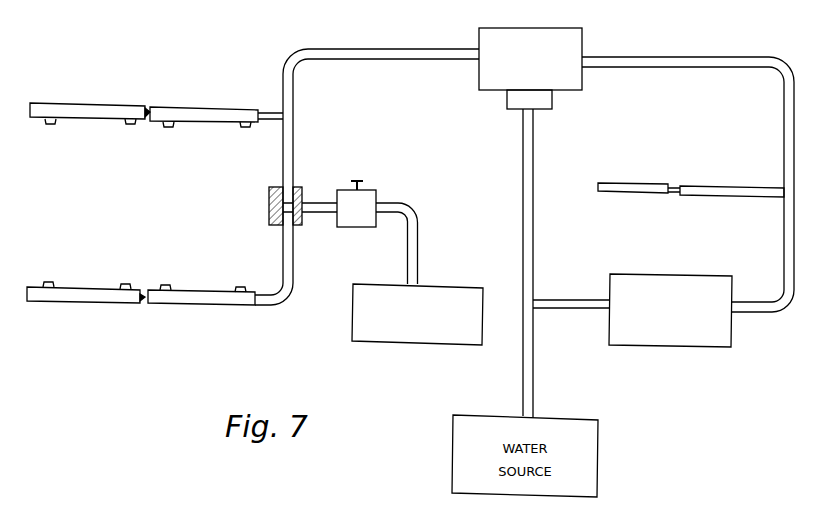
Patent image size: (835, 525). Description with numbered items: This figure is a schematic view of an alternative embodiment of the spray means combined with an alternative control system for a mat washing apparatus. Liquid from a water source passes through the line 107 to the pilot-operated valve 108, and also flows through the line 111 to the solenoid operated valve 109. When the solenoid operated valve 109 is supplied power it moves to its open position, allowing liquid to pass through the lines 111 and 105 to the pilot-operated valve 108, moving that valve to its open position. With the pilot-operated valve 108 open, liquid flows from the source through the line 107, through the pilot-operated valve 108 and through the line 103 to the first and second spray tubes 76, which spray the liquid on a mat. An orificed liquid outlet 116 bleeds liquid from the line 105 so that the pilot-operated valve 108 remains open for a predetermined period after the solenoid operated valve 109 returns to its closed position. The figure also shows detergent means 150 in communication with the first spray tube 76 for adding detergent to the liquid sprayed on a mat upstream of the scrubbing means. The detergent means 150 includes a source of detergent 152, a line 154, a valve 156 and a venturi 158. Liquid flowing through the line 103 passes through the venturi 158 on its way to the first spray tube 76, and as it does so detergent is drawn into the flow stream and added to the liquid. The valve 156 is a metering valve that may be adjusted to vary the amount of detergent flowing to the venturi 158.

The spray tube 76 is at (116, 110).
The line 103 is at (378, 59).
The line 105 is at (785, 95).
The line 107 is at (534, 236).
The pilot-operated valve 108 is at (581, 91).
The solenoid operated valve 109 is at (709, 339).
The line 111 is at (557, 310).
The orificed liquid outlet 116 is at (674, 186).
The detergent means 150 is at (432, 208).
The source of detergent 152 is at (412, 335).
The line 154 is at (420, 260).
The valve 156 is at (366, 197).
The venturi 158 is at (298, 190).